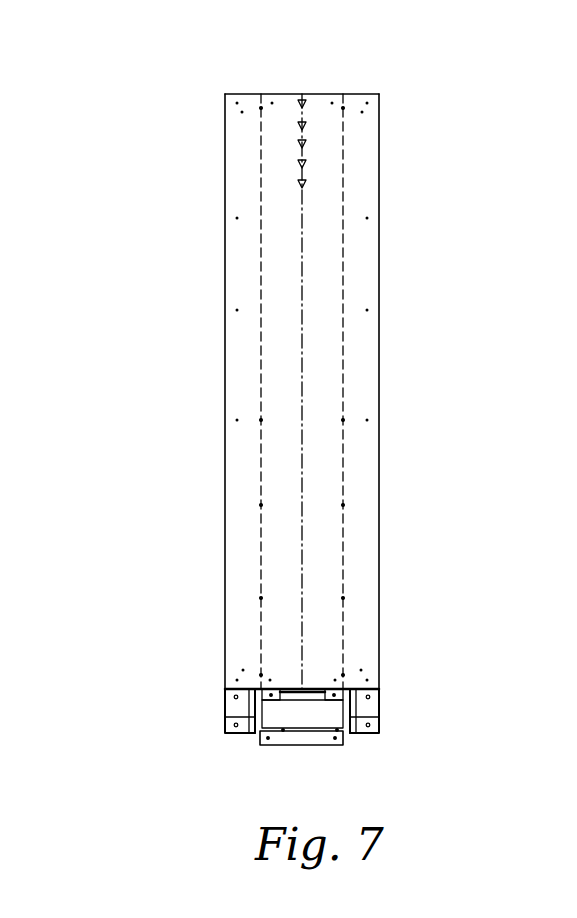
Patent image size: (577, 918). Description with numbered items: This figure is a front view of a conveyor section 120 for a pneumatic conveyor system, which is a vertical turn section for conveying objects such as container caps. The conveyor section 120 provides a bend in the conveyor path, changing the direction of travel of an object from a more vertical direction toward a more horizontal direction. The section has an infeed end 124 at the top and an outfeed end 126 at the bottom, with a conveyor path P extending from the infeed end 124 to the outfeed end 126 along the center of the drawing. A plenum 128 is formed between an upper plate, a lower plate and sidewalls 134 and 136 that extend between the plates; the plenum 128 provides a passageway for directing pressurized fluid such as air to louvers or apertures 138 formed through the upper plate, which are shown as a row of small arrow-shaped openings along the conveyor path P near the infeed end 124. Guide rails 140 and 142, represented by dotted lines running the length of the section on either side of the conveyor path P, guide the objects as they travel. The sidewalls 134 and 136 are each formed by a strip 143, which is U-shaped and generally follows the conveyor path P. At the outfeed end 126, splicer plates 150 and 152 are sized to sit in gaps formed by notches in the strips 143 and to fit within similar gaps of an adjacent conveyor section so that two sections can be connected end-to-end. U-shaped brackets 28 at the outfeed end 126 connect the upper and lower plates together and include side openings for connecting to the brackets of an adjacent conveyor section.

The conveyor section 120 is at (406, 229).
The infeed end 124 is at (368, 79).
The outfeed end 126 is at (355, 754).
The plenum 128 is at (292, 722).
The sidewall 134 is at (219, 464).
The sidewall 136 is at (385, 446).
The louvers or apertures 138 is at (300, 128).
The guide rail 140 is at (261, 352).
The guide rail 142 is at (343, 352).
The strip 143 is at (253, 718).
The splicer plate 150 is at (331, 690).
The splicer plate 152 is at (313, 740).
The U-shaped bracket 28 is at (232, 702).
The conveyor path P is at (302, 542).